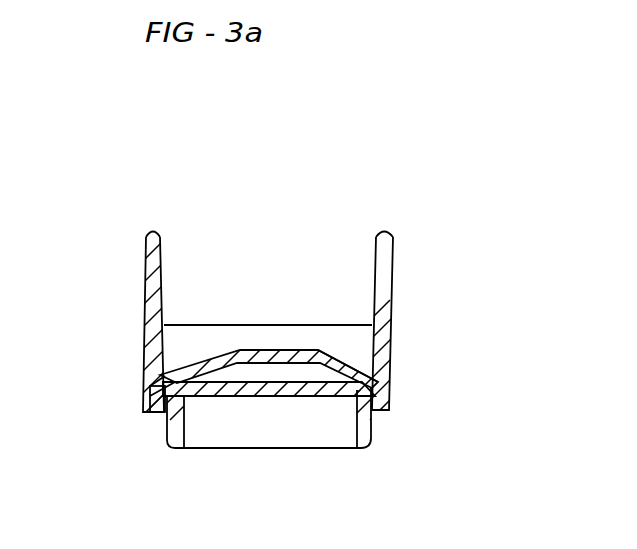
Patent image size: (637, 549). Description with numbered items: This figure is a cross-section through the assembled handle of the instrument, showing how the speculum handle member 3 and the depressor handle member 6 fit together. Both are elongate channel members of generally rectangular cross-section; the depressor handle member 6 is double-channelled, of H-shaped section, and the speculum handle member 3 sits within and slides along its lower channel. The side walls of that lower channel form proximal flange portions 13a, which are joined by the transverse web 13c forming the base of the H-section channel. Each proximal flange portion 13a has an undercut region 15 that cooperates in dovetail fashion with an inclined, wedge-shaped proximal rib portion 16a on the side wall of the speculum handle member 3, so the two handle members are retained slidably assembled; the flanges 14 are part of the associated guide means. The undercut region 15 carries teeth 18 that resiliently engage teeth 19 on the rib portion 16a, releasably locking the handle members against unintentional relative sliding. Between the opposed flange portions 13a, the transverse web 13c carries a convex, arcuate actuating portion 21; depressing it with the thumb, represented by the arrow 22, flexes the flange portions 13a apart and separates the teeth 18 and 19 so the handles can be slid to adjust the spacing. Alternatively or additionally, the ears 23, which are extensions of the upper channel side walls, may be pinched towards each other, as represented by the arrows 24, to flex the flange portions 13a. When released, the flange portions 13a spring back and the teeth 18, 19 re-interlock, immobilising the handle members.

The speculum handle member 3 is at (286, 447).
The depressor handle member 6 is at (358, 218).
The proximal flange portion 13a is at (391, 398).
The transverse web 13c is at (358, 345).
The flange 14 is at (371, 430).
The undercut region 15 is at (145, 378).
The proximal rib portion 16a is at (173, 376).
The teeth 18 is at (147, 378).
The teeth 19 is at (146, 413).
The actuating portion 21 is at (222, 362).
The arrow 22 is at (277, 312).
The ears 23 is at (145, 243).
The arrows 24 is at (134, 281).